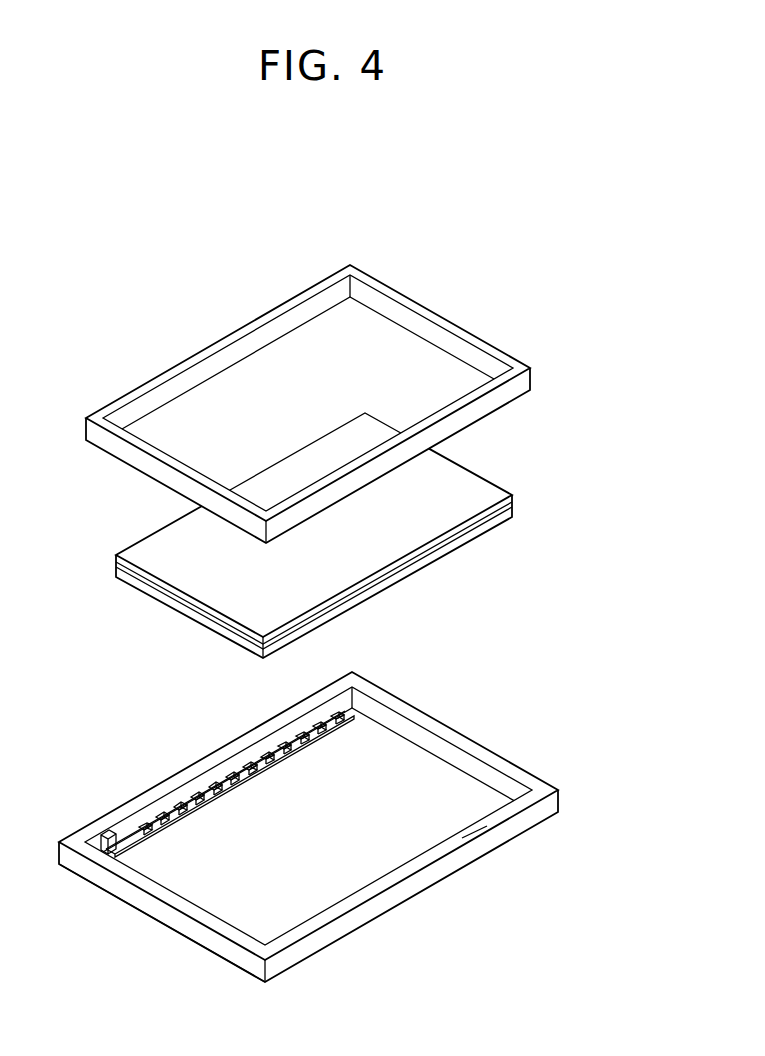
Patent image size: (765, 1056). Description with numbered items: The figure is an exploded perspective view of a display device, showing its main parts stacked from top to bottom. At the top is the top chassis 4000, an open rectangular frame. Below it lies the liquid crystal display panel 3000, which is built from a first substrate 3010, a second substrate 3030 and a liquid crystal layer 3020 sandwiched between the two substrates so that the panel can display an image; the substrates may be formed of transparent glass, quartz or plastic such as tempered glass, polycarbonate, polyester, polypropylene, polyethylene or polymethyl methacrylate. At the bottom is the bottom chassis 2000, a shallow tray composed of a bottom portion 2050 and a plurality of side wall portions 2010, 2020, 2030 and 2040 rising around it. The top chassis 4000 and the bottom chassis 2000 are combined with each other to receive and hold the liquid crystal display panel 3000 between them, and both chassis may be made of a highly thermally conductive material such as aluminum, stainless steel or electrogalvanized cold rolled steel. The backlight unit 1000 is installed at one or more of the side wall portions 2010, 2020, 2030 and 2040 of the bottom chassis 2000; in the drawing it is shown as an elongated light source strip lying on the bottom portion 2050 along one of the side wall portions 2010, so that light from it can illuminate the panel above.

The top chassis 4000 is at (522, 364).
The liquid crystal display panel 3000 is at (391, 535).
The first substrate 3010 is at (483, 483).
The liquid crystal layer 3020 is at (513, 505).
The second substrate 3030 is at (513, 514).
The bottom chassis 2000 is at (370, 825).
The backlight unit 1000 is at (282, 732).
The side wall portion 2010 is at (225, 755).
The side wall portion 2020 is at (527, 778).
The side wall portion 2030 is at (490, 826).
The side wall portion 2040 is at (153, 888).
The bottom portion 2050 is at (398, 800).